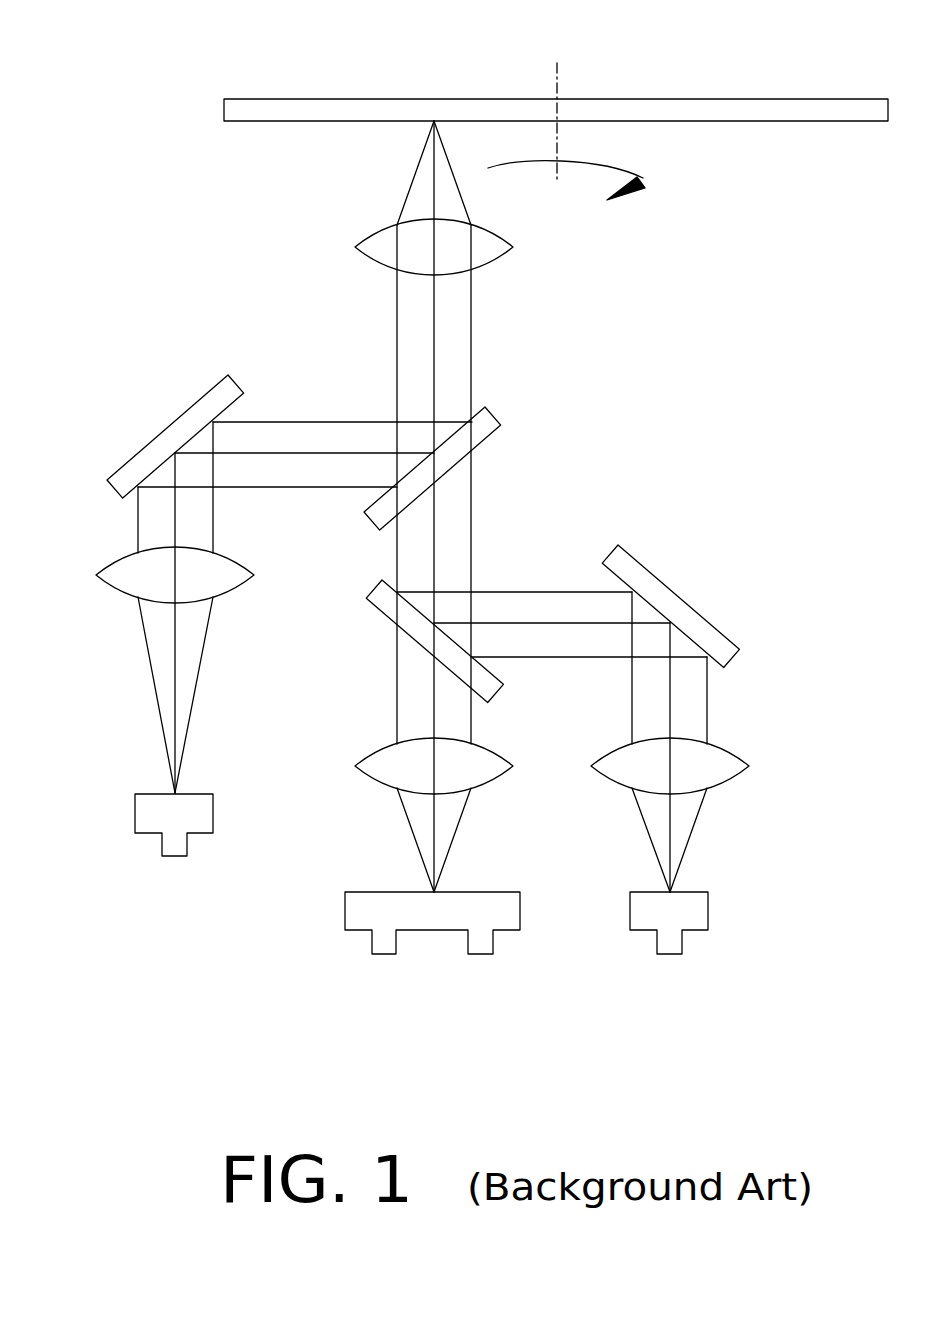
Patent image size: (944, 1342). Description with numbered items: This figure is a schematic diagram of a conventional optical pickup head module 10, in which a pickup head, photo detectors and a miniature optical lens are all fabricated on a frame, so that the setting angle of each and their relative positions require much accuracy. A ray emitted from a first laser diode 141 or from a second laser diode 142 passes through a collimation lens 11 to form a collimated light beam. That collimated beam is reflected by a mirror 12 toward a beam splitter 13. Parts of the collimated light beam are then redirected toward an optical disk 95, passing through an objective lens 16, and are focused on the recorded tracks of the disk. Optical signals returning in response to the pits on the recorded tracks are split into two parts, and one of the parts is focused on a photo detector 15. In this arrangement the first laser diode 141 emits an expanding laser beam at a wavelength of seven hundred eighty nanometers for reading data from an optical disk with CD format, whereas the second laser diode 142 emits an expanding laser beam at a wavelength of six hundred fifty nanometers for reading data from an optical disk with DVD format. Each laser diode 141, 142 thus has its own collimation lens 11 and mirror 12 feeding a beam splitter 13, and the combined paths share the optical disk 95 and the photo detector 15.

The optical pickup system 10 is at (838, 452).
The collimation lens 11 is at (232, 580).
The mirror 12 is at (218, 397).
The beam splitter 13 is at (478, 430).
The photo detector 15 is at (362, 917).
The objective lens 16 is at (485, 245).
The optical disk 95 is at (848, 110).
The first laser diode 141 is at (148, 818).
The second laser diode 142 is at (648, 918).